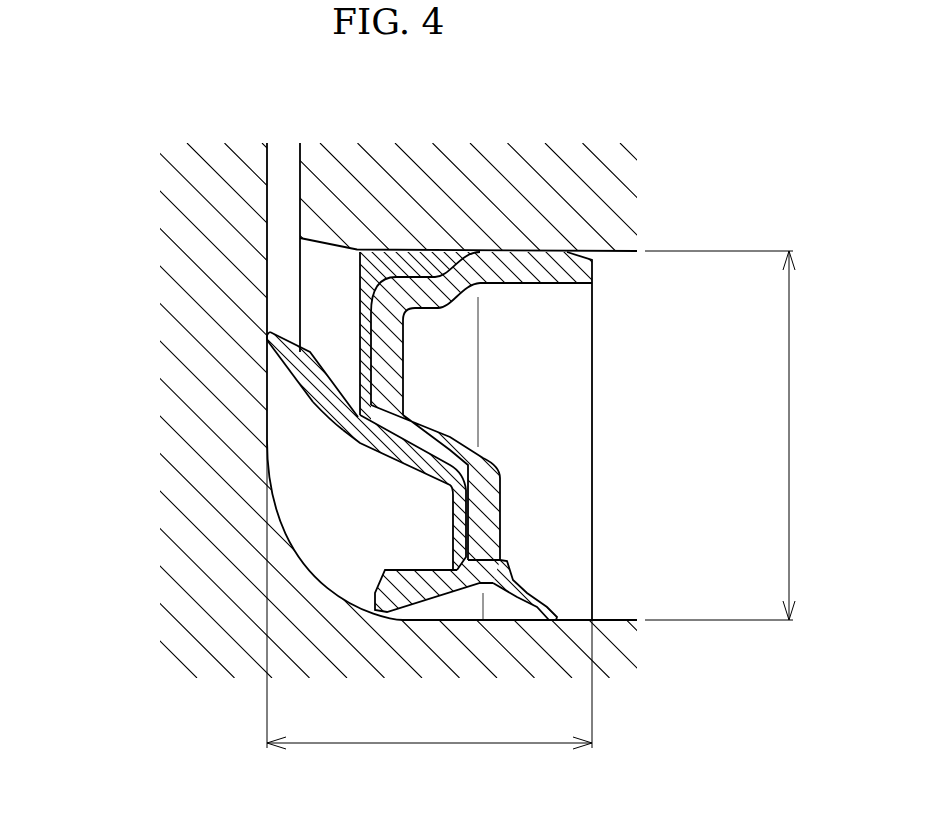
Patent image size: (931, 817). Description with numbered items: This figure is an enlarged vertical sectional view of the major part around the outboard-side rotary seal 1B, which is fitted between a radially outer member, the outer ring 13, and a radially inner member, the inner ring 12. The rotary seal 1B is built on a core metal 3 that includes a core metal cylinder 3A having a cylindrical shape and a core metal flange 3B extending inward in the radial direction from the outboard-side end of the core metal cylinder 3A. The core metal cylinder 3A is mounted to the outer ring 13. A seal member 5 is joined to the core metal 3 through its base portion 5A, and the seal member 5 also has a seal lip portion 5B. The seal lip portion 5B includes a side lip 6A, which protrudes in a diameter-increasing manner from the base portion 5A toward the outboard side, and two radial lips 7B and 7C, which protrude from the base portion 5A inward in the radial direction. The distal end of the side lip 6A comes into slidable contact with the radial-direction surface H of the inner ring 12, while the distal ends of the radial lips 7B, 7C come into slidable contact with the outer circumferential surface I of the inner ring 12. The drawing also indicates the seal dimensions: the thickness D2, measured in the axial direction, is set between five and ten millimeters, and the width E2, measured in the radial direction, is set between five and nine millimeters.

The outer ring 13 is at (445, 172).
The inner ring 12 is at (620, 647).
The rotary seal 1B is at (652, 445).
The core metal 3 is at (668, 295).
The core metal cylinder 3A is at (493, 281).
The core metal flange 3B is at (395, 400).
The seal member 5 is at (78, 288).
The base portion 5A is at (346, 327).
The seal lip portion 5B is at (276, 392).
The side lip 6A is at (313, 402).
The radial lip 7B is at (540, 600).
The radial lip 7C is at (405, 583).
The radial-direction surface H is at (267, 437).
The outer circumferential surface I is at (613, 620).
The width of the seal E2 is at (739, 435).
The thickness of the seal D2 is at (429, 731).